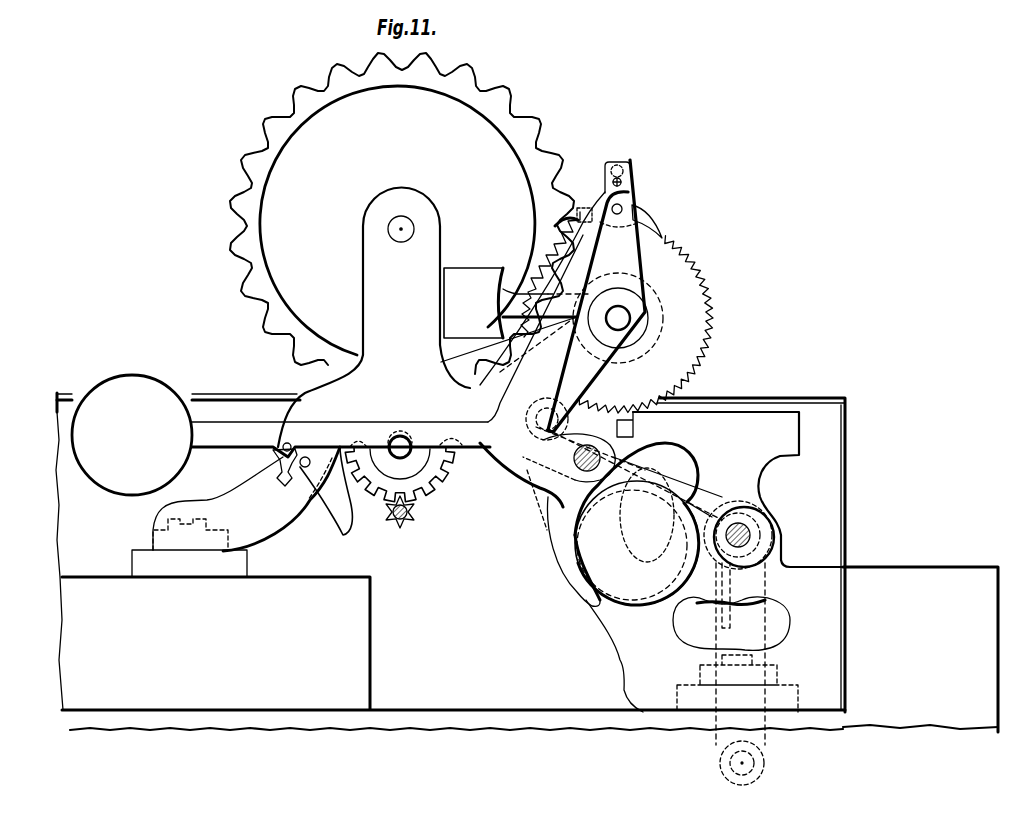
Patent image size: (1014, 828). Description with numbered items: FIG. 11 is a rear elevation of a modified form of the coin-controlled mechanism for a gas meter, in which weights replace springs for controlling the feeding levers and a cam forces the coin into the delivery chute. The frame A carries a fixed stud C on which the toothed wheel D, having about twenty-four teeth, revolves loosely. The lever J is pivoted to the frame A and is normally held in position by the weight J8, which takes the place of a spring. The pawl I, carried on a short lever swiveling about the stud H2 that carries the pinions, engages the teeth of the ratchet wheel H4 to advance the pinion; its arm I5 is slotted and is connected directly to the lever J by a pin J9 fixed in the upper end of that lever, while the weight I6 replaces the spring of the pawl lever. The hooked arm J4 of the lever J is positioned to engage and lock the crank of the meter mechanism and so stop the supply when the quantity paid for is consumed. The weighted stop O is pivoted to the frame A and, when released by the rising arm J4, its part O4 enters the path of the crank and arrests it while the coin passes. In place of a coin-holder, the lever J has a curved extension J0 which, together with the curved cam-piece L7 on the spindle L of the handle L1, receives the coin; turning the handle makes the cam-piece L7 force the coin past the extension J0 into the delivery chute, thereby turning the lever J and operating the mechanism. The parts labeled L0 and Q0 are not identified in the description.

The toothed wheel D is at (402, 213).
The stud C is at (392, 234).
The lever J is at (441, 320).
The hooked arm J4 is at (366, 432).
The weight J8 is at (132, 435).
The pin J9 is at (621, 183).
The curved extension J0 is at (563, 572).
The pawl I is at (648, 213).
The arm of pawl I5 is at (624, 172).
The weight I6 is at (516, 303).
The stud H2 is at (624, 318).
The ratchet wheel H4 is at (708, 322).
The spindle L is at (752, 533).
The disk L0 is at (629, 596).
The handle L1 is at (534, 423).
The curved cam-piece L7 is at (712, 503).
The frame A is at (246, 499).
The stop O is at (345, 534).
The part of stop O4 is at (272, 452).
The pinion Q0 is at (410, 513).